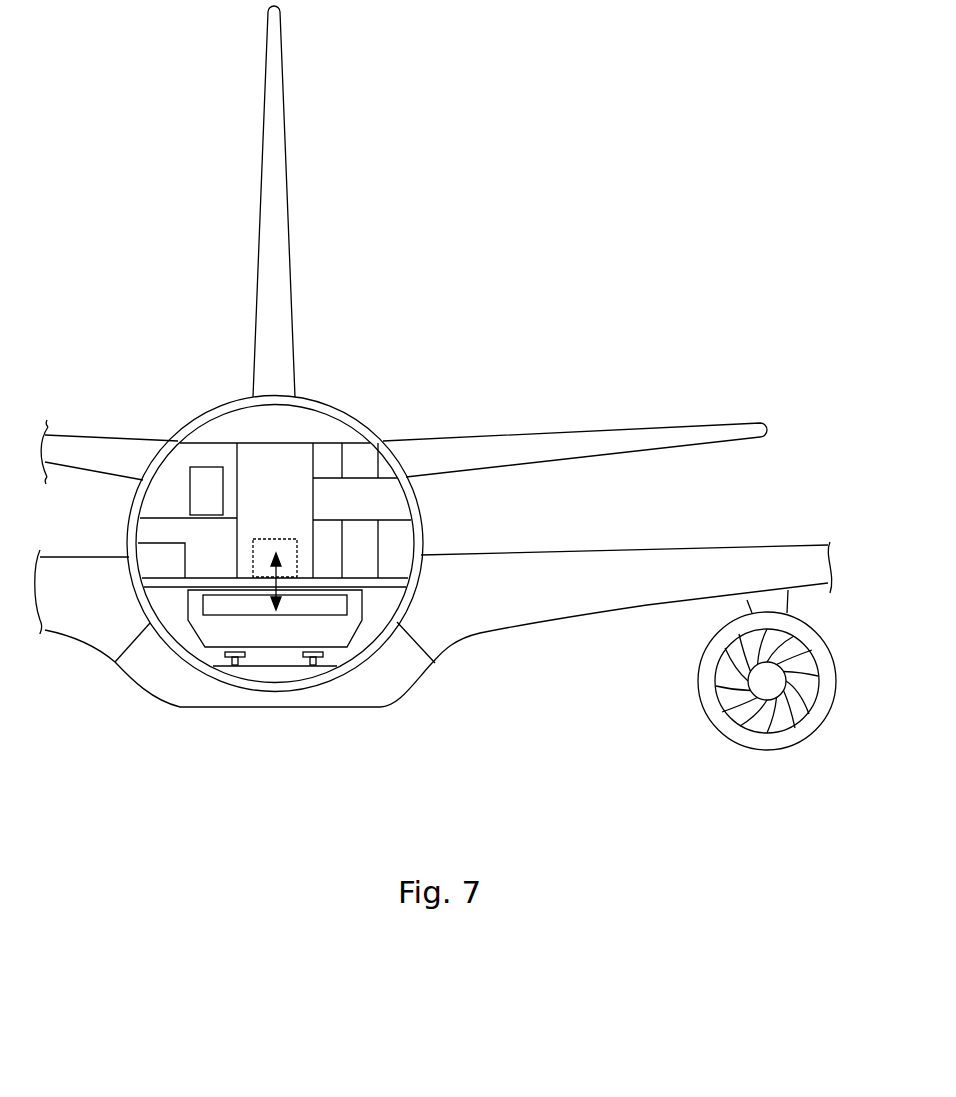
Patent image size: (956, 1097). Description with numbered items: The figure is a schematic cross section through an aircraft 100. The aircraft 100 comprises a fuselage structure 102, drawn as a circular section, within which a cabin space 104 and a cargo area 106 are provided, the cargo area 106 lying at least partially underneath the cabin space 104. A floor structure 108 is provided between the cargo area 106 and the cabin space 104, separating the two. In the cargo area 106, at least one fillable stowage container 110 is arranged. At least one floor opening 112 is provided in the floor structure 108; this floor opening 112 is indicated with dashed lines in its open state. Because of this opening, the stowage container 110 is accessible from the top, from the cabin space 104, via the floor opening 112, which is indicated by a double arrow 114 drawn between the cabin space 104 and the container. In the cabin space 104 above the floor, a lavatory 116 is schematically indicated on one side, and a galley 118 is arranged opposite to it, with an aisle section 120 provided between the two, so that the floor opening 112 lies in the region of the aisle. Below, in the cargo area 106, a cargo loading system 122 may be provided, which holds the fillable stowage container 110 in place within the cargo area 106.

The aircraft 100 is at (390, 312).
The fuselage structure 102 is at (222, 405).
The cabin space 104 is at (345, 432).
The cargo area 106 is at (398, 590).
The floor structure 108 is at (163, 573).
The fillable stowage container 110 is at (213, 628).
The floor opening 112 is at (262, 539).
The double arrow 114 is at (278, 573).
The lavatory 116 is at (180, 463).
The galley 118 is at (388, 503).
The aisle section 120 is at (295, 458).
The cargo loading system 122 is at (300, 657).